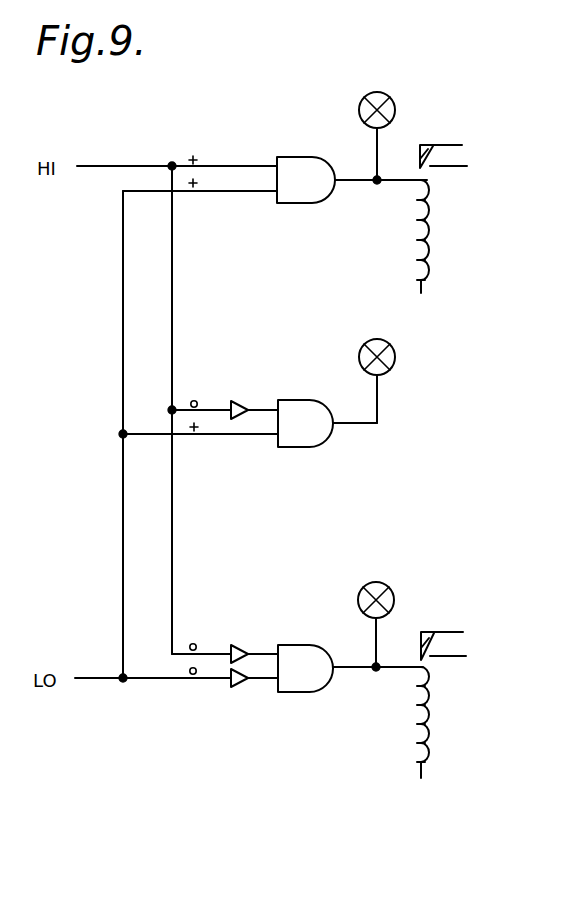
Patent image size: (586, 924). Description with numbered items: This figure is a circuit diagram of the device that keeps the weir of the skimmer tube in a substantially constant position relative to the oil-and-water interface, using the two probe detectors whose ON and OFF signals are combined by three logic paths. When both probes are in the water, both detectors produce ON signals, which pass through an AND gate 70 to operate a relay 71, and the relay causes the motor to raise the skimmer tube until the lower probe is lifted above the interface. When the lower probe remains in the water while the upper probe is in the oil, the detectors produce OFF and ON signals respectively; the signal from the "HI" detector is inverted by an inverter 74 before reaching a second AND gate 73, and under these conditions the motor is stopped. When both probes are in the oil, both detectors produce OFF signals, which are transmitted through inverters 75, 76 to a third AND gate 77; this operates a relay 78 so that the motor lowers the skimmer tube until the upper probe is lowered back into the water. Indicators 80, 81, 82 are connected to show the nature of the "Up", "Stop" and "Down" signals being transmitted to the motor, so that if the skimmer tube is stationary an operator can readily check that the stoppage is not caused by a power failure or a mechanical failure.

The AND gate 70 is at (310, 157).
The relay 71 is at (457, 153).
The AND gate 73 is at (318, 400).
The inverter 74 is at (240, 400).
The inverter 75 is at (238, 645).
The inverter 76 is at (237, 688).
The AND gate 77 is at (310, 645).
The relay 78 is at (452, 644).
The indicator 80 is at (379, 92).
The indicator 81 is at (379, 339).
The indicator 82 is at (378, 582).